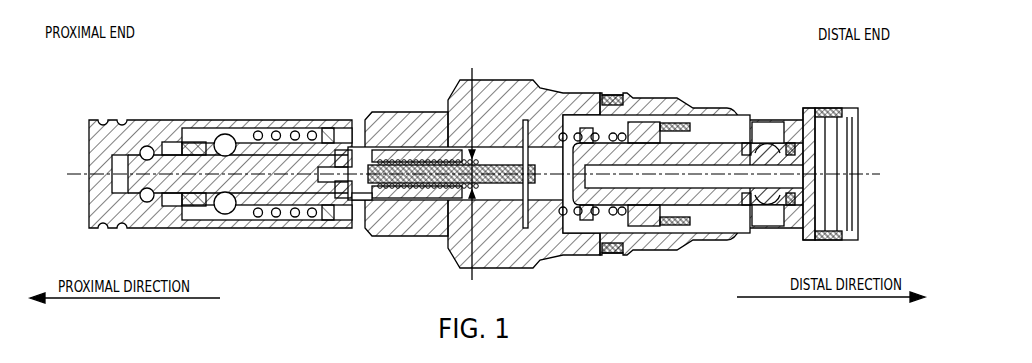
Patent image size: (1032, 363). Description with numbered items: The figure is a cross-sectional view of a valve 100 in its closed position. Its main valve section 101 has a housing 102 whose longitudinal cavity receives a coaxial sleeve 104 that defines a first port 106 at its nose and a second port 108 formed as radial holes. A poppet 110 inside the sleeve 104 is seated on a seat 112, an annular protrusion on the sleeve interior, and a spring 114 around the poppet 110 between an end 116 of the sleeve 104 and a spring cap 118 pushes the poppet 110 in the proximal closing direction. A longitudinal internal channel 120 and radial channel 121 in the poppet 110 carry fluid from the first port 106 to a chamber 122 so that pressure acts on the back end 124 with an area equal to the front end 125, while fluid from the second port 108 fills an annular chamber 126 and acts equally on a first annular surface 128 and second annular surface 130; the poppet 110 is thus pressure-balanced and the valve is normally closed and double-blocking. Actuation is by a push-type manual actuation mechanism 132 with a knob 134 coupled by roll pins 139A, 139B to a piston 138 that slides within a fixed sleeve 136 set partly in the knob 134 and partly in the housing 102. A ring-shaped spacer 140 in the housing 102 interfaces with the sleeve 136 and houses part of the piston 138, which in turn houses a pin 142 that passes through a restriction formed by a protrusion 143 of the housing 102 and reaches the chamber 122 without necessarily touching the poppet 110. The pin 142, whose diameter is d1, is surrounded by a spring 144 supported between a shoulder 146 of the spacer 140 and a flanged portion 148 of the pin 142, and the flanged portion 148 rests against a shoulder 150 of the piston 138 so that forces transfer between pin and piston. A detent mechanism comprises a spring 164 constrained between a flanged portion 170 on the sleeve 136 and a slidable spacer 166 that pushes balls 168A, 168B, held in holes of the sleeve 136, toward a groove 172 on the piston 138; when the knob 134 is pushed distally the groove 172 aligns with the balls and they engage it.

The valve 100 is at (92, 99).
The main valve section 101 is at (724, 75).
The housing 102 is at (503, 87).
The sleeve 104 is at (738, 119).
The first port 106 is at (862, 174).
The second port 108 is at (766, 96).
The poppet 110 is at (727, 193).
The seat 112 is at (801, 206).
The spring 114 is at (610, 95).
The end of the sleeve 116 is at (625, 223).
The spring cap 118 is at (565, 93).
The longitudinal internal channel 120 is at (667, 245).
The radial channel 121 is at (587, 196).
The chamber 122 is at (574, 220).
The back end 124 is at (525, 198).
The front end 125 is at (834, 151).
The annular chamber 126 is at (768, 140).
The first annular surface 128 is at (750, 206).
The second annular surface 130 is at (795, 140).
The push-type manual actuation mechanism 132 is at (228, 147).
The knob 134 is at (162, 122).
The sleeve 136 is at (338, 120).
The piston 138 is at (267, 182).
The roll pin 139A is at (146, 146).
The roll pin 139B is at (147, 202).
The spacer 140 is at (476, 157).
The pin 142 is at (427, 180).
The protrusion 143 is at (520, 128).
The spring 144 is at (393, 187).
The shoulder 146 is at (481, 196).
The flanged portion 148 is at (367, 210).
The shoulder 150 is at (365, 155).
The spring 164 is at (278, 131).
The spacer 166 is at (259, 131).
The ball 168A is at (226, 136).
The ball 168B is at (224, 212).
The flanged portion 170 is at (308, 127).
The groove 172 is at (208, 195).
The diameter of the pin d1 is at (470, 95).